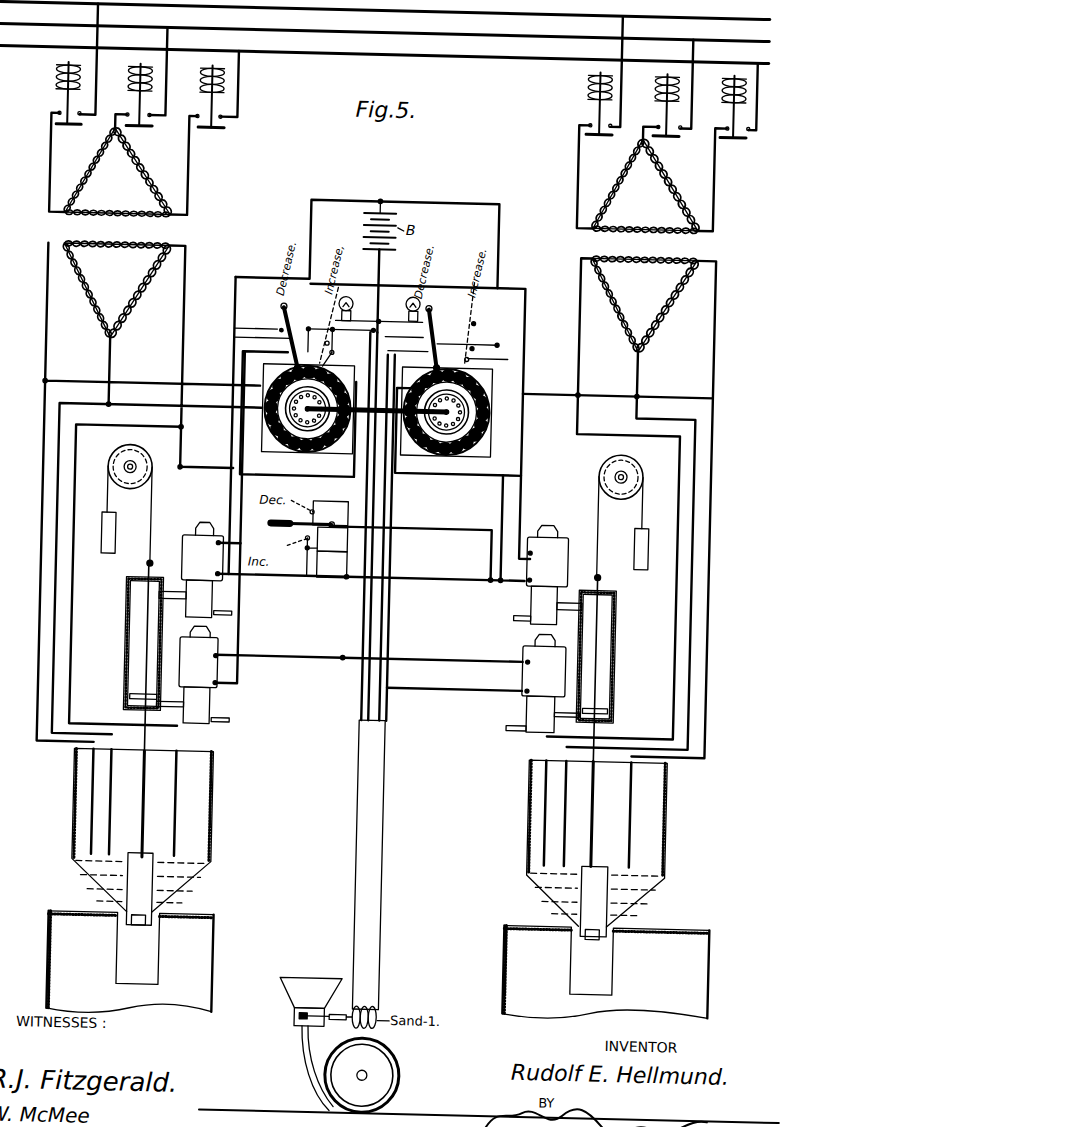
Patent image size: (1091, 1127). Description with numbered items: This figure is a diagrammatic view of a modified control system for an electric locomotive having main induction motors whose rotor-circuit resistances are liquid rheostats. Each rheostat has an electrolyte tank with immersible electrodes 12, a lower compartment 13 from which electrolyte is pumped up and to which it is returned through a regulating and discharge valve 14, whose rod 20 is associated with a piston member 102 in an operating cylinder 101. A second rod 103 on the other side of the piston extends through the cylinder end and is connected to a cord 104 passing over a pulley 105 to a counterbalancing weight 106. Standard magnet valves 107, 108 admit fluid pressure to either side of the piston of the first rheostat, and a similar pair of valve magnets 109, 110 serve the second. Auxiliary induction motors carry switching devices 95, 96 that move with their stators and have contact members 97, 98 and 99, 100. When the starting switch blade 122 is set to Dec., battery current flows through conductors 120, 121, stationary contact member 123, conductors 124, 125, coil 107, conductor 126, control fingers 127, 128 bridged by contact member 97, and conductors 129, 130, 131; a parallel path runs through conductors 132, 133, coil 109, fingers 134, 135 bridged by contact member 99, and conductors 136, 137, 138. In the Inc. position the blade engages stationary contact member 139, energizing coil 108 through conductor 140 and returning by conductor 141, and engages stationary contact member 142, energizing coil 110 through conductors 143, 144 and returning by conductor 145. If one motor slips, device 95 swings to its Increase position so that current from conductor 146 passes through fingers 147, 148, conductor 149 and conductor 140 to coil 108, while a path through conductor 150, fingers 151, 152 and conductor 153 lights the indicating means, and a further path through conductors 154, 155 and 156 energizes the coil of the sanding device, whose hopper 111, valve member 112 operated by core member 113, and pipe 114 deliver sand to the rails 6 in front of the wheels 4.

The wheels 4 is at (411, 1084).
The rails 6 is at (287, 1112).
The immersible plates or electrodes 12 is at (93, 833).
The lower compartments 13 is at (208, 937).
The regulating and discharge valves 14 is at (150, 895).
The rod of the valve 20 is at (150, 796).
The switch 95 is at (287, 367).
The switch 96 is at (458, 366).
The contact member 97 is at (307, 343).
The contact member 98 is at (277, 328).
The contact member 99 is at (456, 343).
The contact member 100 is at (425, 318).
The operating cylinder 101 is at (128, 650).
The piston member 102 is at (128, 701).
The second rod 103 is at (130, 628).
The cord or cable 104 is at (151, 532).
The pulley 105 is at (132, 481).
The counterbalancing weight 106 is at (100, 538).
The magnet valve 107 is at (222, 677).
The magnet valve 108 is at (182, 557).
The operating valve magnet 109 is at (525, 676).
The operating valve magnet 110 is at (564, 539).
The hopper 111 is at (292, 996).
The valve member 112 is at (303, 1022).
The core member 113 is at (341, 1023).
The pipe or tube 114 is at (312, 1050).
The conductor 120 is at (403, 202).
The conductor 121 is at (492, 344).
The blade 122 is at (296, 532).
The stationary contact member 123 is at (316, 508).
The conductor 124 is at (337, 502).
The conductor 125 is at (294, 658).
The conductor 126 is at (240, 635).
The control finger 127 is at (280, 353).
The control finger 128 is at (283, 340).
The conductor 129 is at (255, 320).
The conductor 130 is at (231, 304).
The conductor 131 is at (373, 262).
The conductor 132 is at (420, 658).
The conductor 133 is at (446, 683).
The control finger 134 is at (408, 351).
The control finger 135 is at (458, 323).
The conductor 136 is at (450, 365).
The conductor 137 is at (404, 339).
The conductor 138 is at (373, 313).
The stationary contact member 139 is at (299, 555).
The conductor 140 is at (301, 580).
The conductor 141 is at (238, 500).
The stationary contact member 142 is at (332, 539).
The conductor 143 is at (332, 564).
The conductor 144 is at (502, 581).
The conductor 145 is at (520, 505).
The conductor 146 is at (345, 202).
The control finger 147 is at (337, 349).
The control finger 148 is at (327, 362).
The conductor 149 is at (344, 368).
The conductor 150 is at (340, 324).
The control finger 151 is at (338, 341).
The control finger 152 is at (324, 325).
The conductor 153 is at (357, 308).
The conductor 154 is at (362, 337).
The conductor 155 is at (362, 746).
The conductor 156 is at (387, 872).